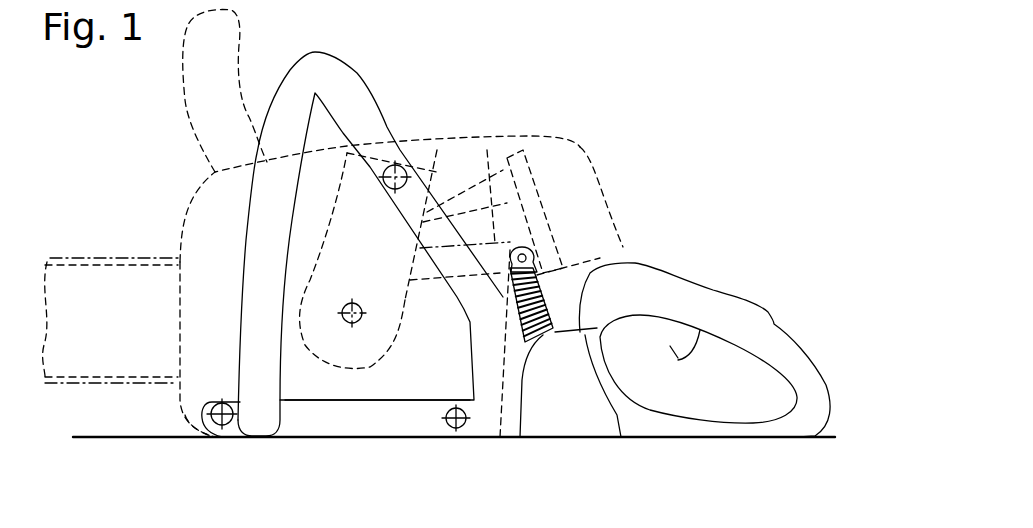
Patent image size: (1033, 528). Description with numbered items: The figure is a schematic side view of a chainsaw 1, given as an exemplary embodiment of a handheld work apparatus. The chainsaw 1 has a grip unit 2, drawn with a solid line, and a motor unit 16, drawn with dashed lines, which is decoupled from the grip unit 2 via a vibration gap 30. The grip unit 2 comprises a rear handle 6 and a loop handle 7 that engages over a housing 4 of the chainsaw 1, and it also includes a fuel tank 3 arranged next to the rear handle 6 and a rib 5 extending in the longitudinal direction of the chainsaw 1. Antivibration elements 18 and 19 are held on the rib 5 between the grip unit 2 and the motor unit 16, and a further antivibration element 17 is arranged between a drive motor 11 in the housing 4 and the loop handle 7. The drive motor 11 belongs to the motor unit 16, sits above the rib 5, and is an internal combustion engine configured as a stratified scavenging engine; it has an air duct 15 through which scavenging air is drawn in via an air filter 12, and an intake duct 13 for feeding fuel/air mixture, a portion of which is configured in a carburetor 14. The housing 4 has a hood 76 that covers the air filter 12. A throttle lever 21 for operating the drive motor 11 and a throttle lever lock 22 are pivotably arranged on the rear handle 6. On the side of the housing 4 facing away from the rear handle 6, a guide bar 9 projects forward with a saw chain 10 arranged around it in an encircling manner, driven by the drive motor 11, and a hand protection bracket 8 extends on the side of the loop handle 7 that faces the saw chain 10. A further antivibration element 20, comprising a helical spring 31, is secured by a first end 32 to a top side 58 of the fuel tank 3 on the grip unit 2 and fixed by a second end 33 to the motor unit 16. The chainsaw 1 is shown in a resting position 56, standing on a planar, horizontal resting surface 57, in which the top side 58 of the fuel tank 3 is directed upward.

The chainsaw 1 is at (680, 82).
The grip unit 2 is at (606, 430).
The fuel tank 3 is at (556, 420).
The housing 4 is at (192, 403).
The rib 5 is at (348, 430).
The rear handle 6 is at (713, 300).
The loop handle 7 is at (329, 77).
The hand protection bracket 8 is at (202, 76).
The guide bar 9 is at (121, 283).
The saw chain 10 is at (82, 258).
The drive motor 11 is at (430, 178).
The air filter 12 is at (533, 160).
The intake duct 13 is at (425, 268).
The carburetor 14 is at (515, 247).
The air duct 15 is at (467, 210).
The motor unit 16 is at (474, 125).
The antivibration element 17 is at (398, 166).
The antivibration element 18 is at (457, 428).
The antivibration element 19 is at (221, 420).
The antivibration element 20 is at (557, 304).
The throttle lever 21 is at (637, 318).
The throttle lever lock 22 is at (757, 303).
The vibration gap 30 is at (630, 250).
The helical spring 31 is at (508, 437).
The first end 32 is at (543, 336).
The second end 33 is at (530, 266).
The resting position 56 is at (761, 159).
The resting surface 57 is at (101, 437).
The top side 58 is at (563, 333).
The hood 76 is at (580, 148).